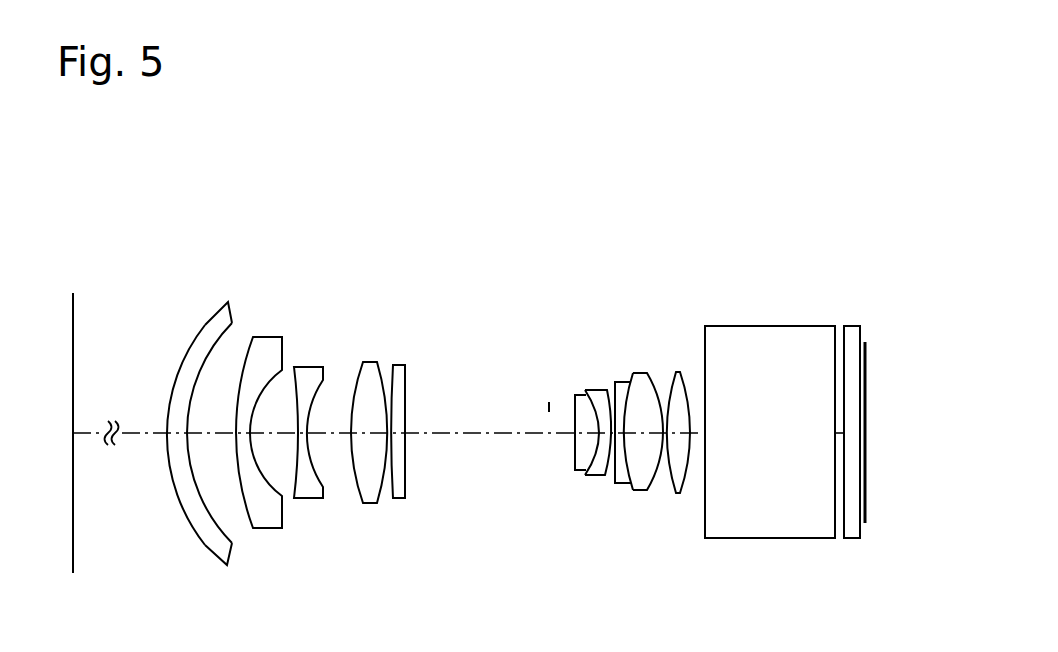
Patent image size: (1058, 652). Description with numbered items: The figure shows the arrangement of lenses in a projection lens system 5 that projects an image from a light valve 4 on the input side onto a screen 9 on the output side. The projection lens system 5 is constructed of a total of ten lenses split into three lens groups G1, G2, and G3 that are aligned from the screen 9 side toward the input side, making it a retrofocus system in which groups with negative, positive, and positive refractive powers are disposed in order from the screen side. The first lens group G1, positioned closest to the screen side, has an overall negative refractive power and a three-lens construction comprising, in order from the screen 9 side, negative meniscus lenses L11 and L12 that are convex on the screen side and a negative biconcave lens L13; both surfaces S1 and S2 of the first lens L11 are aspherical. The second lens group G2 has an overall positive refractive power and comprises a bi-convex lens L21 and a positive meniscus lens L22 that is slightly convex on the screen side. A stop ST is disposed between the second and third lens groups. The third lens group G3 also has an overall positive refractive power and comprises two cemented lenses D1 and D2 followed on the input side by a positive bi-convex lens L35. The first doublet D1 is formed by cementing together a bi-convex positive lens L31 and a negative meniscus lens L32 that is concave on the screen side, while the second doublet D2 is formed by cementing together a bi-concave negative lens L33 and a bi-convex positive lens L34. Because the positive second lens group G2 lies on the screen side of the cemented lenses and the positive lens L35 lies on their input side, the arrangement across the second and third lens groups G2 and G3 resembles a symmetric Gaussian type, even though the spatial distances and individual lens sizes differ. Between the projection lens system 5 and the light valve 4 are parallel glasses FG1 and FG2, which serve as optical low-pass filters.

The projection lens system 5 is at (660, 176).
The screen 9 is at (73, 357).
The first lens group G1 is at (313, 226).
The second lens group G2 is at (465, 226).
The third lens group G3 is at (737, 226).
The lens L11 is at (214, 428).
The lens L12 is at (271, 355).
The lens L13 is at (308, 372).
The lens L21 is at (368, 373).
The lens L22 is at (398, 373).
The lens L31 is at (580, 396).
The lens L32 is at (571, 421).
The lens L33 is at (622, 387).
The lens L34 is at (656, 402).
The lens L35 is at (678, 375).
The surface S1 is at (207, 548).
The surface S2 is at (220, 526).
The stop ST is at (549, 406).
The first cemented lens D1 is at (590, 486).
The second cemented lens D2 is at (628, 497).
The parallel glass FG1 is at (773, 350).
The parallel glass FG2 is at (852, 335).
The light valve 4 is at (867, 392).